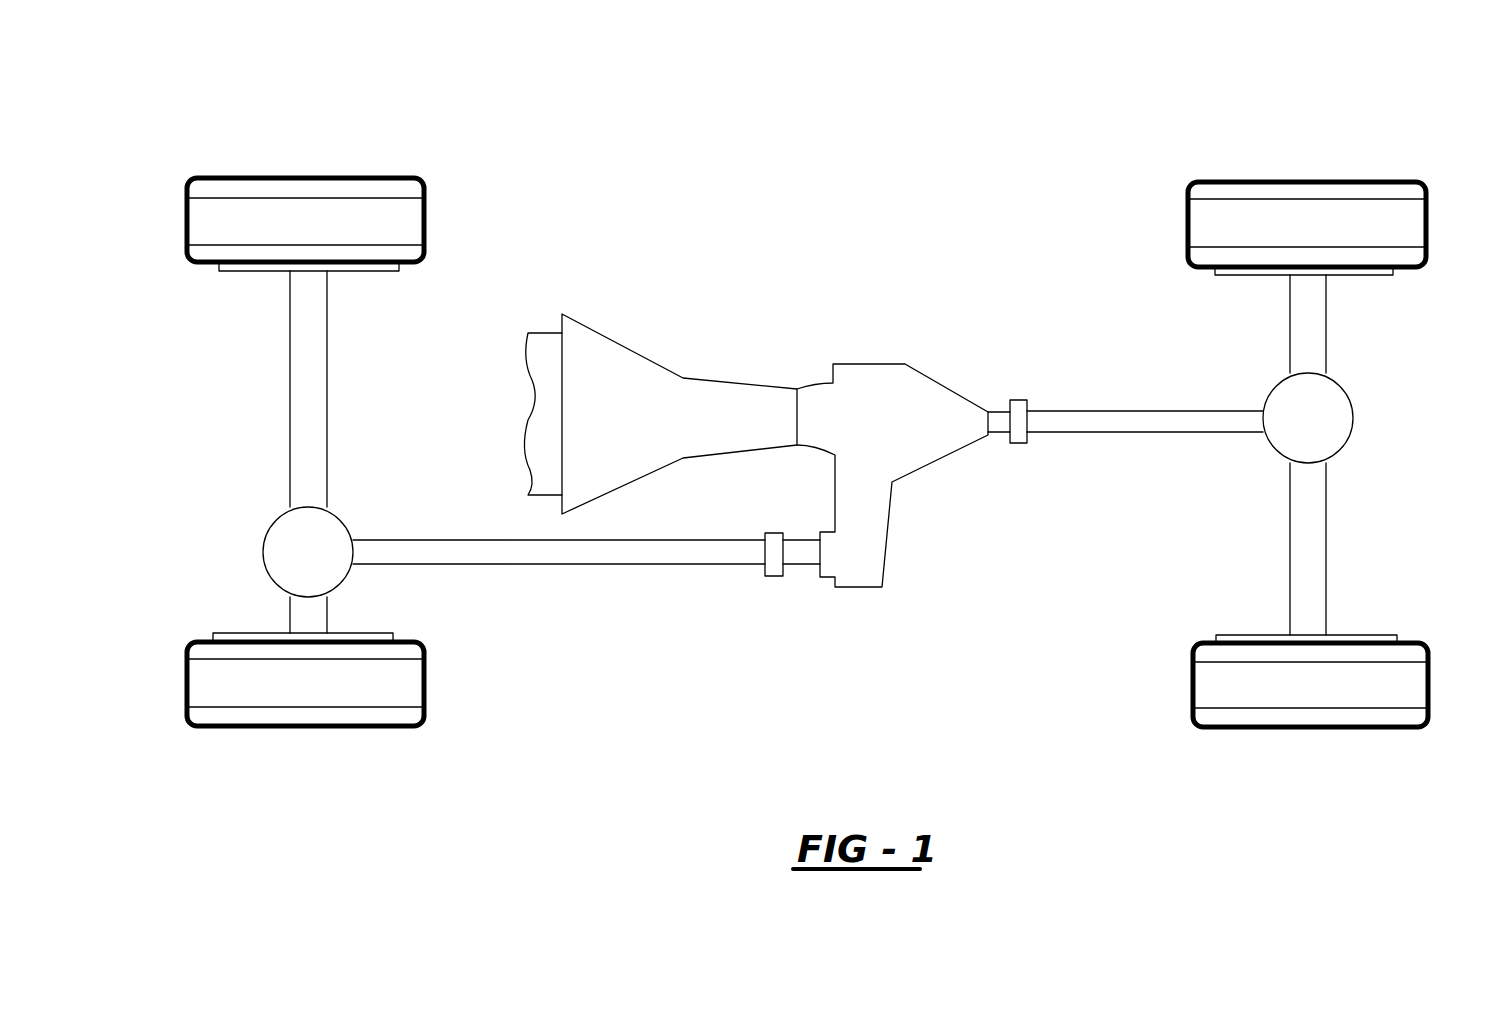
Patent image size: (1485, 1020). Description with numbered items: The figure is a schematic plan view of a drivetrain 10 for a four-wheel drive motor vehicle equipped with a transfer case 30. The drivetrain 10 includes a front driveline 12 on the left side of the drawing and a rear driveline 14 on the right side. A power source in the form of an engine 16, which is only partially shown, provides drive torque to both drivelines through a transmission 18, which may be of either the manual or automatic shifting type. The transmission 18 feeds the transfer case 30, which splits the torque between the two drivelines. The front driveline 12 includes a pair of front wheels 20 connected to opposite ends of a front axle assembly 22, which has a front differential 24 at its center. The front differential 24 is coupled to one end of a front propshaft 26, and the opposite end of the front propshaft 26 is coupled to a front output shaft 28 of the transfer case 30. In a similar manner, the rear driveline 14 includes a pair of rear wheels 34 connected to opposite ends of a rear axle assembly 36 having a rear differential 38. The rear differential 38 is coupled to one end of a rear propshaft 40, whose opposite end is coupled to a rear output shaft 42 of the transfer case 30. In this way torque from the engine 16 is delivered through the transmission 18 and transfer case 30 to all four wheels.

The drivetrain 10 is at (800, 238).
The front driveline 12 is at (358, 411).
The rear driveline 14 is at (1274, 405).
The engine 16 is at (543, 382).
The transmission 18 is at (705, 427).
The front wheels 20 is at (268, 218).
The front axle assembly 22 is at (300, 338).
The front differential 24 is at (285, 552).
The front propshaft 26 is at (670, 552).
The front output shaft 28 is at (805, 552).
The transfer case 30 is at (893, 520).
The rear wheels 34 is at (1327, 227).
The rear axle assembly 36 is at (1316, 320).
The rear differential 38 is at (1322, 420).
The rear propshaft 40 is at (1222, 432).
The rear output shaft 42 is at (997, 411).